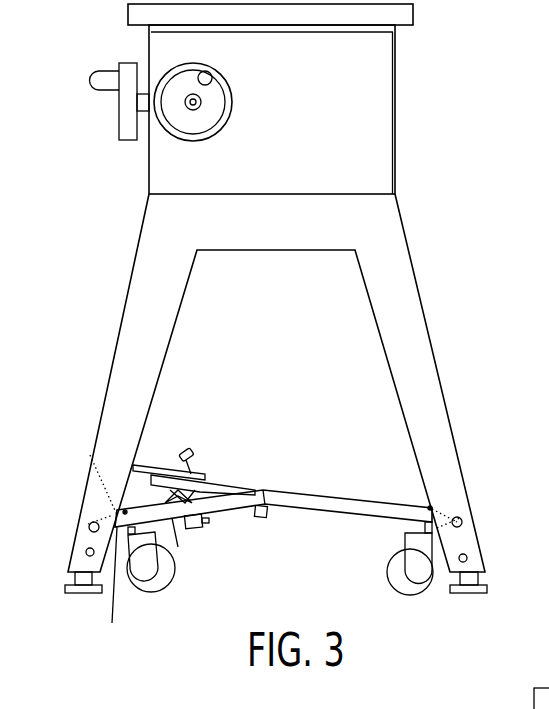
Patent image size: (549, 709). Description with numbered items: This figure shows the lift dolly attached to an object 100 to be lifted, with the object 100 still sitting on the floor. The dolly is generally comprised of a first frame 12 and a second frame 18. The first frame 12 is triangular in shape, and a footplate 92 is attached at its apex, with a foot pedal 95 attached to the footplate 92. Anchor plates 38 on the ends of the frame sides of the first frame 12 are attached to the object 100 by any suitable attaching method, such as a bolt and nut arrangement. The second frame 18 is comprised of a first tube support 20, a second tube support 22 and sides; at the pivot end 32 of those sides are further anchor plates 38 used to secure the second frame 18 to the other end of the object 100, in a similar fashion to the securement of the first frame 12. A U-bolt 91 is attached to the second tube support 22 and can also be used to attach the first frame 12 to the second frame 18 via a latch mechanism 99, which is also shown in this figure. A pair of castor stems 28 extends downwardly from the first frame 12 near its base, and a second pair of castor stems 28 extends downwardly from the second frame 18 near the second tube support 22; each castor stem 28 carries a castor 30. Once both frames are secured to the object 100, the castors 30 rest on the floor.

The object to be lifted 100 is at (276, 298).
The first frame 12 is at (312, 493).
The second frame 18 is at (112, 623).
The first tube support 20 is at (203, 527).
The second tube support 22 is at (266, 512).
The castor stem 28 is at (150, 558).
The castor 30 is at (153, 592).
The pivot end 32 is at (90, 455).
The anchor plate 38 is at (88, 524).
The U-bolt 91 is at (178, 547).
The footplate 92 is at (169, 448).
The foot pedal 95 is at (193, 455).
The latch mechanism 99 is at (225, 478).